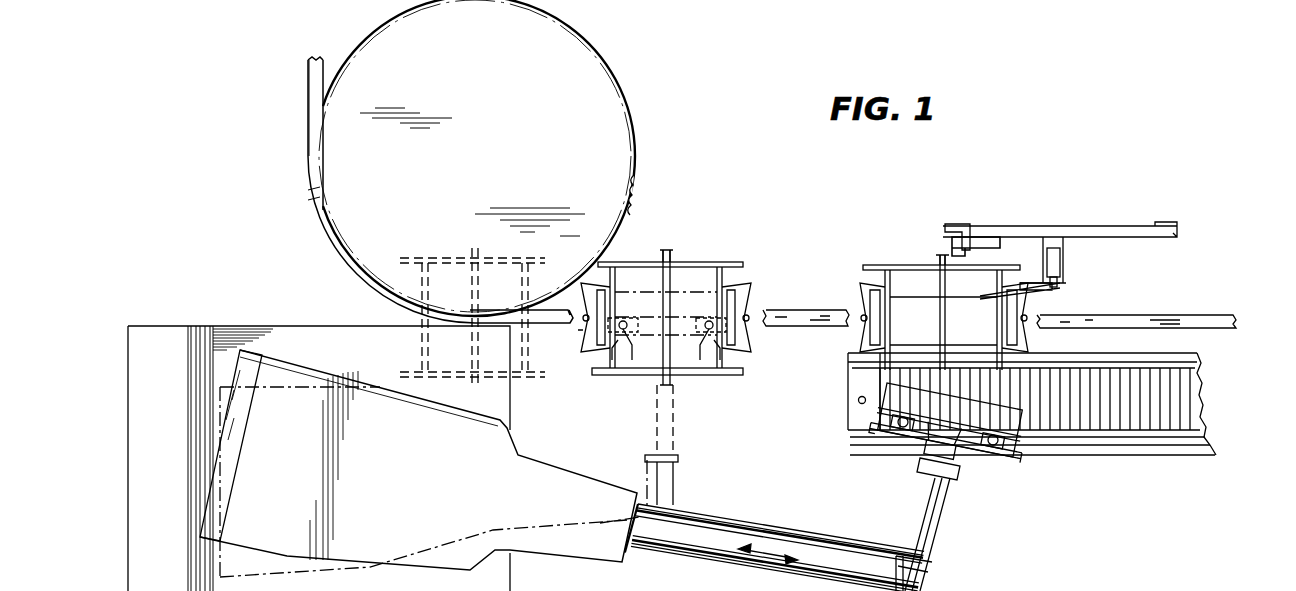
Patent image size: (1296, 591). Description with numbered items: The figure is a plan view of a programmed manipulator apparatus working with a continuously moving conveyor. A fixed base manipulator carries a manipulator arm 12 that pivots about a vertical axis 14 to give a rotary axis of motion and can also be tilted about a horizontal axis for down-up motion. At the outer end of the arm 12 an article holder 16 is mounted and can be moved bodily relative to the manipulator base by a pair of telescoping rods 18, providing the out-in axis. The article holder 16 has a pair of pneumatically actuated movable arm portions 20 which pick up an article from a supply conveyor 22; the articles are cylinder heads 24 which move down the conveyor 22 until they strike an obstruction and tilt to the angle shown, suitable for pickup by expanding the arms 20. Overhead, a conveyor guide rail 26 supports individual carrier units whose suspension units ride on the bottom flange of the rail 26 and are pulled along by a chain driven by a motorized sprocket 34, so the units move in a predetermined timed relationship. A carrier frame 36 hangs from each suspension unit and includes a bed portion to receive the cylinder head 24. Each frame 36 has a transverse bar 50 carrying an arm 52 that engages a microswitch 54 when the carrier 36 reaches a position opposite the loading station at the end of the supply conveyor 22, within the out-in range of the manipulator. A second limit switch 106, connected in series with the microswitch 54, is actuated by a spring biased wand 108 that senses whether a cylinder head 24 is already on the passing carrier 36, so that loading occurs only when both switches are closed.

The manipulator arm 12 is at (575, 548).
The vertical axis 14 is at (424, 486).
The article holder 16 is at (673, 431).
The telescoping rods 18 is at (768, 529).
The movable arm portions 20 is at (632, 346).
The supply conveyor 22 is at (1092, 420).
The cylinder head 24 is at (996, 414).
The conveyor guide rail 26 is at (803, 316).
The motorized sprocket 34 is at (620, 147).
The carrier frame 36 is at (749, 383).
The transverse bar 50 is at (668, 250).
The arm 52 is at (940, 254).
The microswitch 54 is at (948, 244).
The second limit switch 106 is at (1052, 261).
The spring biased wand 108 is at (1030, 290).